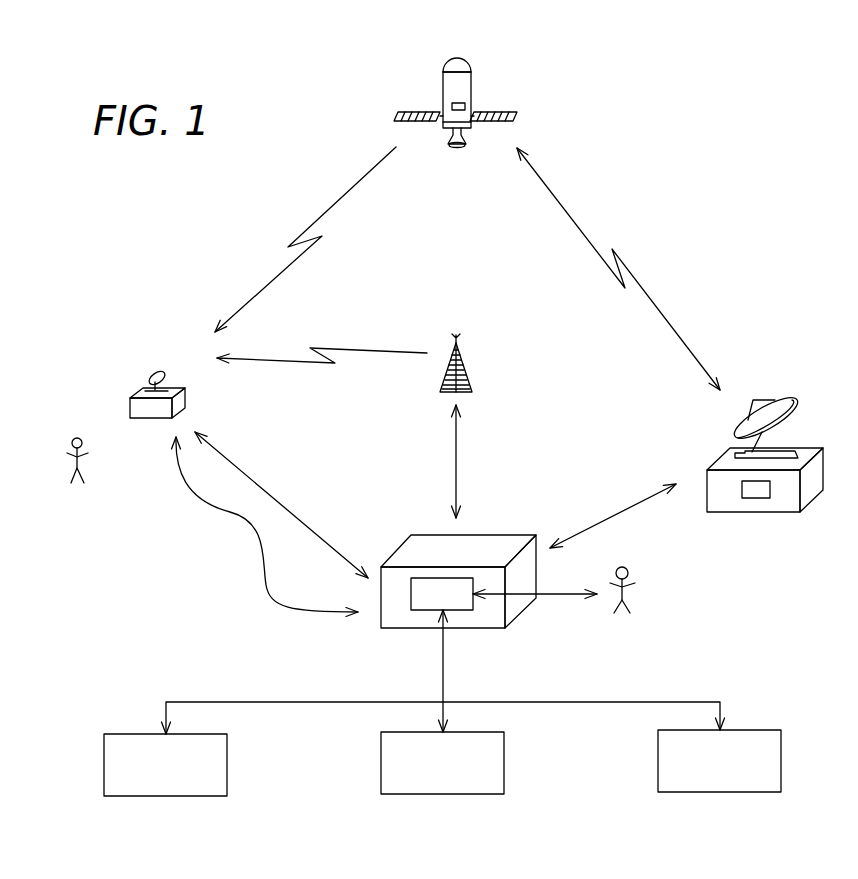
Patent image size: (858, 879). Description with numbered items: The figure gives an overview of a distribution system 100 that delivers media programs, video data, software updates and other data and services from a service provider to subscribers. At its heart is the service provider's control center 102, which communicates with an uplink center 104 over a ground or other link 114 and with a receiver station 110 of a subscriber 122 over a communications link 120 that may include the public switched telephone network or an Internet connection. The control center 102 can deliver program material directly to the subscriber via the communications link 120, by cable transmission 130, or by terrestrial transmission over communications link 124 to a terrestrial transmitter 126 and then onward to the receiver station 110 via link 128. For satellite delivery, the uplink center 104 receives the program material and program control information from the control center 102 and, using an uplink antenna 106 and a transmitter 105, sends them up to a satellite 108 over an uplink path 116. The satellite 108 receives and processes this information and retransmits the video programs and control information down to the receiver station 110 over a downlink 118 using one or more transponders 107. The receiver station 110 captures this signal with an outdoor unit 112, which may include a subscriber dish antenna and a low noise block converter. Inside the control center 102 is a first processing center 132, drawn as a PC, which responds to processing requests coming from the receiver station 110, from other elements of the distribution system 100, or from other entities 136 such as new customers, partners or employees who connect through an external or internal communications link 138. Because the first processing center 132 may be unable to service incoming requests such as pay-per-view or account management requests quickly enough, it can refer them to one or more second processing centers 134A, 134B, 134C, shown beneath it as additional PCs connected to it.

The distribution system 100 is at (683, 133).
The control center 102 is at (465, 628).
The uplink center 104 is at (748, 513).
The transmitter 105 is at (770, 500).
The uplink antenna 106 is at (790, 405).
The transponder 107 is at (462, 100).
The satellite 108 is at (498, 128).
The receiver station 110 is at (190, 395).
The outdoor unit 112 is at (150, 376).
The ground link 114 is at (607, 518).
The satellite link to ground station 116 is at (655, 310).
The downlink 118 is at (338, 208).
The communications link 120 is at (305, 525).
The subscriber 122 is at (94, 474).
The communications link 124 is at (460, 452).
The terrestrial transmitter 126 is at (466, 360).
The link 128 is at (353, 350).
The cable transmission 130 is at (268, 583).
The first processing center 132 is at (428, 540).
The second processing center 134A is at (227, 780).
The second processing center 134B is at (505, 778).
The second processing center 134C is at (781, 776).
The other entities 136 is at (638, 588).
The communications link 138 is at (553, 597).